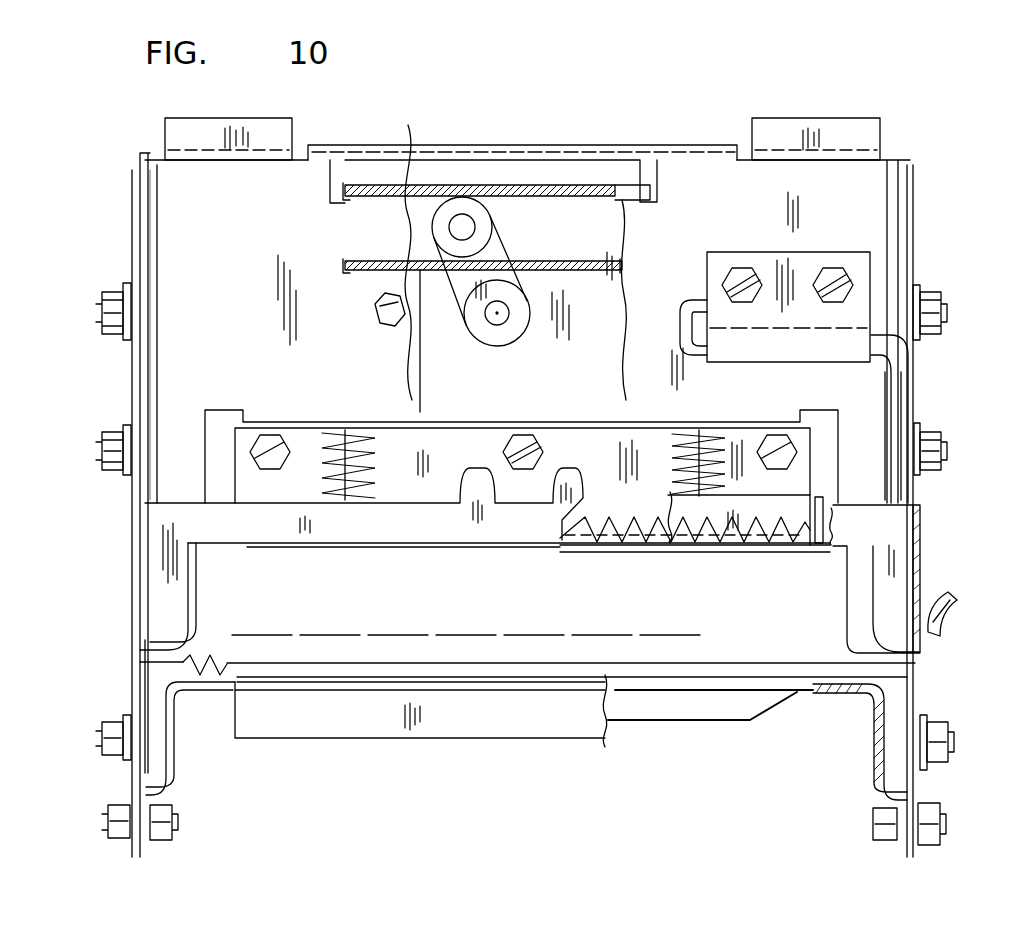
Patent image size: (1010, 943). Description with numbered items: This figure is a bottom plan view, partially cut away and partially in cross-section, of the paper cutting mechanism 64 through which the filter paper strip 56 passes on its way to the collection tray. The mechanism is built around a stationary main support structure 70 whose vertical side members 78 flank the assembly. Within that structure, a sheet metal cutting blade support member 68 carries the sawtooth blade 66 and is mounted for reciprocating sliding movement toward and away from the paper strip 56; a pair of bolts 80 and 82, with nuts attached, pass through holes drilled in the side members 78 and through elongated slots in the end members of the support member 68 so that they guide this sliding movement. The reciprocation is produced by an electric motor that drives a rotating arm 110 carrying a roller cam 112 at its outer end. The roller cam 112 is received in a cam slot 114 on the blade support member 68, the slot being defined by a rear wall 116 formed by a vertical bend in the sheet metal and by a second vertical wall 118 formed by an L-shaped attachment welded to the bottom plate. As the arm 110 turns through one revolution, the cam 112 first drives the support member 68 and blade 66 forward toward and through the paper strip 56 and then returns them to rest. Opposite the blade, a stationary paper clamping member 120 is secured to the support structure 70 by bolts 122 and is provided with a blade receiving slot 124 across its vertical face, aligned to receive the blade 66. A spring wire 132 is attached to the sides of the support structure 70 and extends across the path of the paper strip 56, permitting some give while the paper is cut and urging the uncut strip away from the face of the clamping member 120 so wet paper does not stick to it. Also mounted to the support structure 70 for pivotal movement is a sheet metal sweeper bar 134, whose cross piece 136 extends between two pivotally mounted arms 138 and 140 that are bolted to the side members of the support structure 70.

The filter paper strip 56 is at (517, 612).
The paper cutting mechanism 64 is at (707, 193).
The blade 66 is at (783, 549).
The cutting blade support member 68 is at (865, 395).
The main support structure 70 is at (131, 412).
The vertical side members 78 is at (130, 273).
The bolt 80 is at (110, 470).
The bolt 82 is at (110, 330).
The rotating arm 110 is at (510, 228).
The roller cam 112 is at (460, 207).
The cam slot 114 is at (536, 200).
The rear wall 116 is at (494, 253).
The second vertical wall 118 is at (598, 270).
The stationary paper clamping member 120 is at (352, 742).
The bolts 122 is at (162, 842).
The blade receiving slot 124 is at (808, 696).
The spring wire 132 is at (330, 656).
The sweeper bar 134 is at (912, 542).
The cross piece 136 is at (280, 513).
The arm 138 is at (142, 704).
The arm 140 is at (912, 702).